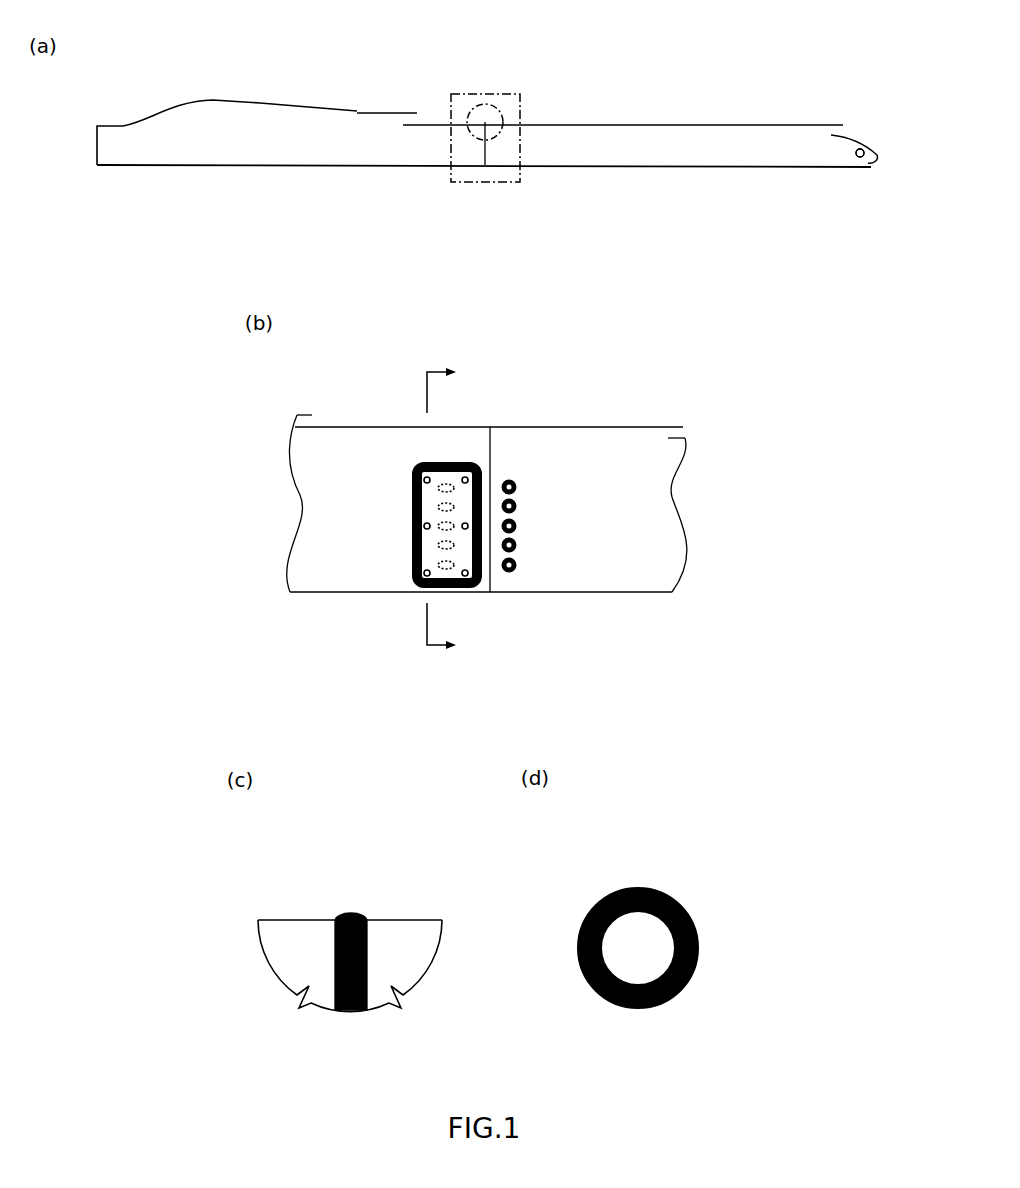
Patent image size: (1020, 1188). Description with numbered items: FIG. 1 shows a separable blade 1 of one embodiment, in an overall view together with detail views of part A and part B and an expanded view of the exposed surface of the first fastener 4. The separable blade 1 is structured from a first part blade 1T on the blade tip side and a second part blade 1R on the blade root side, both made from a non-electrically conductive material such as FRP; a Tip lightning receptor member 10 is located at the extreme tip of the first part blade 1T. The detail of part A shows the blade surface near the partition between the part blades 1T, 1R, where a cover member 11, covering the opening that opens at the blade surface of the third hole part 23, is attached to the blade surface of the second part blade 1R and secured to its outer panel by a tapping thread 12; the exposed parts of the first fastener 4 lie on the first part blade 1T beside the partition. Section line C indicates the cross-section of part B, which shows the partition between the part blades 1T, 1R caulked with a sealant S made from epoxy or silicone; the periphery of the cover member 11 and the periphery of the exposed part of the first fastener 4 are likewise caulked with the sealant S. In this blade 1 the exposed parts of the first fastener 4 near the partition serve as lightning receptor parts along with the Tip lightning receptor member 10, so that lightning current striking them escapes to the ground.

The separable blade 1 is at (630, 75).
The second part blade 1R is at (277, 120).
The first part blade 1T is at (673, 137).
The Tip lightning receptor member 10 is at (866, 147).
The part A is at (463, 93).
The part B is at (497, 103).
The section line C is at (456, 511).
The tapping thread 12 is at (413, 473).
The cover member 11 is at (418, 566).
The third hole part 23 is at (442, 562).
The sealant S is at (412, 511).
The first fastener 4 is at (517, 485).